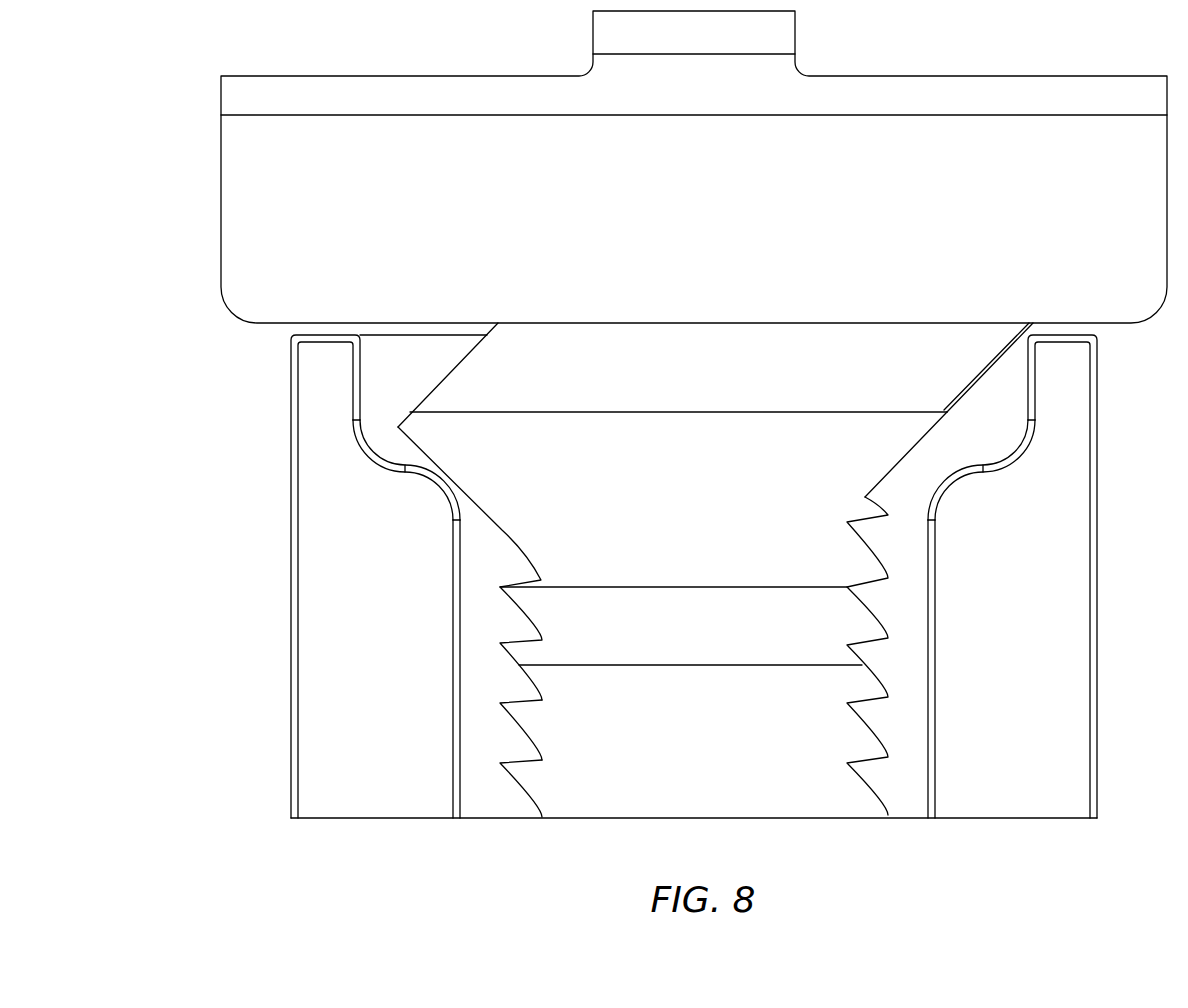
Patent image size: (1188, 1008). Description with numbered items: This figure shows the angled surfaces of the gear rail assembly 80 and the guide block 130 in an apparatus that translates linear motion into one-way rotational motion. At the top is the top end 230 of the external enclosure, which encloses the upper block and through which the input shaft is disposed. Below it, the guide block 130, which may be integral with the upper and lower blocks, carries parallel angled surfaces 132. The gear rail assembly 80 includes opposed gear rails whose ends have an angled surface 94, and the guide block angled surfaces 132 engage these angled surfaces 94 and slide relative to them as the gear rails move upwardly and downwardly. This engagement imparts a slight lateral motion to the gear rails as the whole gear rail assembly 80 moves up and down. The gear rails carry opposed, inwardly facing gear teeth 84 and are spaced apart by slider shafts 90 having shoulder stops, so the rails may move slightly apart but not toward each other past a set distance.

The top end 230 is at (937, 173).
The gear rail assembly 80 is at (668, 576).
The angled surface 94 is at (438, 383).
The guide block 130 is at (696, 570).
The angled surfaces 132 is at (458, 369).
The slider shafts 90 is at (643, 622).
The gear teeth 84 is at (543, 698).